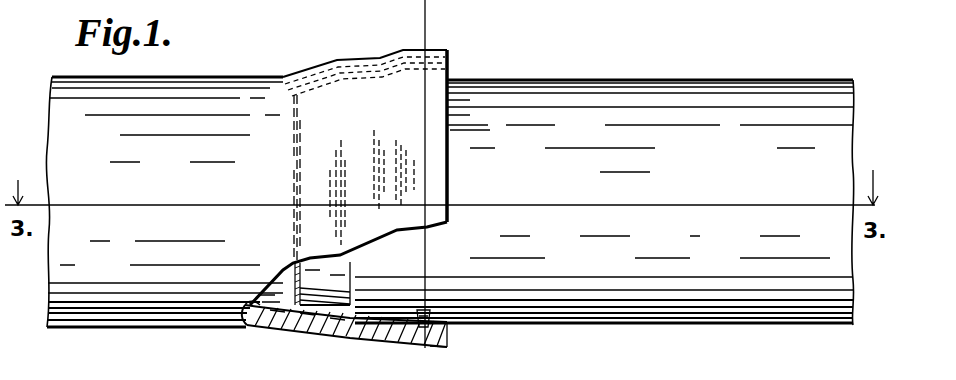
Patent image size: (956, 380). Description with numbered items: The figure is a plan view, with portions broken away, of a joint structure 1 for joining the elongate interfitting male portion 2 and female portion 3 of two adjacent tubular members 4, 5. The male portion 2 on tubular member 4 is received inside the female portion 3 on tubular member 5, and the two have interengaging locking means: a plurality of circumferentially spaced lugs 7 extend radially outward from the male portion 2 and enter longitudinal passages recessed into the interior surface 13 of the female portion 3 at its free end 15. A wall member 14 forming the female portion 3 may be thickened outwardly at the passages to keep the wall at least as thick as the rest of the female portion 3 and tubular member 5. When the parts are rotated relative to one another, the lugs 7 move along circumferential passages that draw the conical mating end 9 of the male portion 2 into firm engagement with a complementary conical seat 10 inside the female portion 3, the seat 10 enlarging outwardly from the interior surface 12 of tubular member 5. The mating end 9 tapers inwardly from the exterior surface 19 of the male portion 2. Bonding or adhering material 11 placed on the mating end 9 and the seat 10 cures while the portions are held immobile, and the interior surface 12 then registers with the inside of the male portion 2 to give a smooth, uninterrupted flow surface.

The joint structure 1 is at (446, 38).
The male portion 2 is at (472, 76).
The female portion 3 is at (387, 50).
The tubular member 4 is at (792, 95).
The tubular member 5 is at (62, 133).
The lug 7 is at (431, 346).
The mating end 9 is at (336, 318).
The seat 10 is at (278, 320).
The bonding or adhering material 11 is at (309, 321).
The interior surface 12 is at (244, 326).
The interior surface 13 is at (387, 334).
The wall member 14 is at (350, 331).
The free end 15 is at (449, 118).
The exterior surface 19 is at (370, 312).